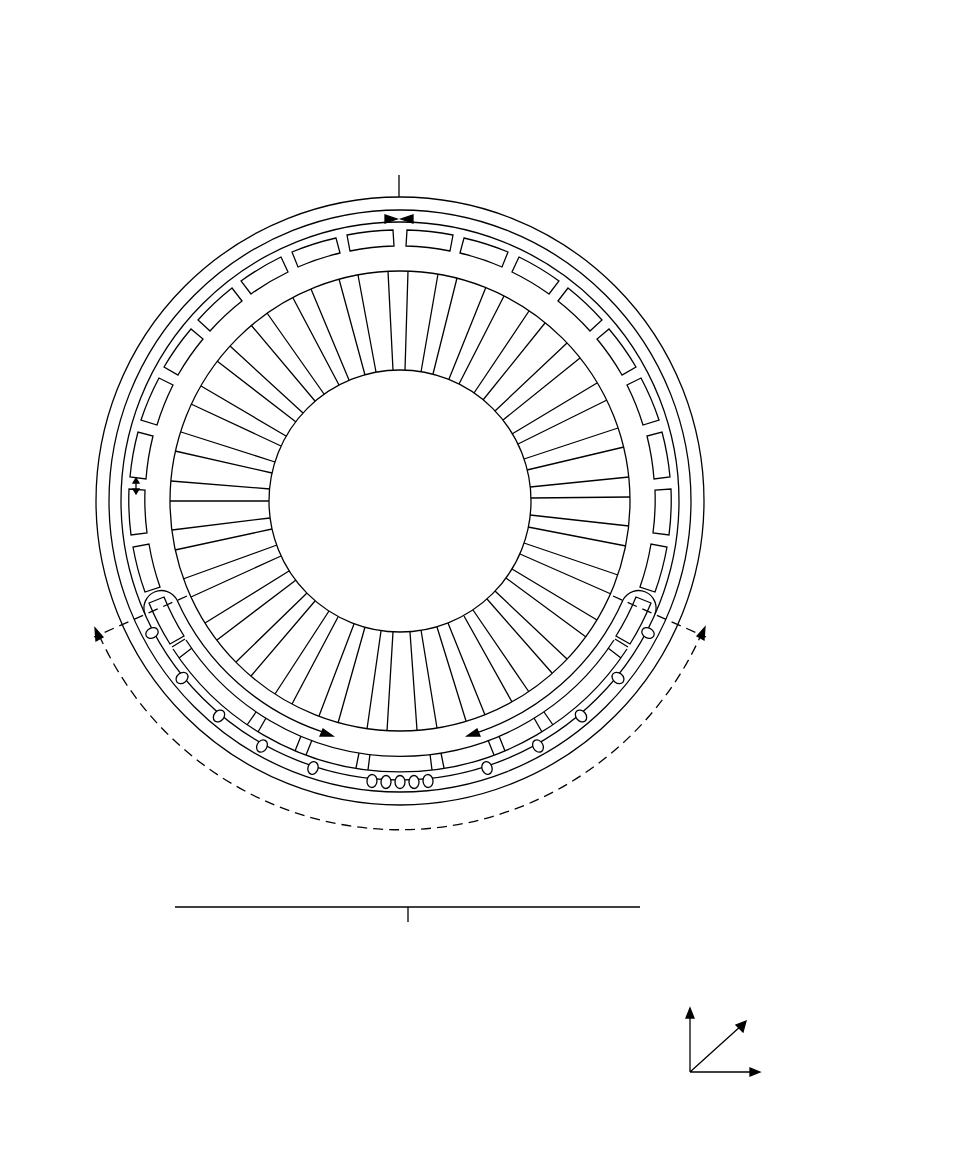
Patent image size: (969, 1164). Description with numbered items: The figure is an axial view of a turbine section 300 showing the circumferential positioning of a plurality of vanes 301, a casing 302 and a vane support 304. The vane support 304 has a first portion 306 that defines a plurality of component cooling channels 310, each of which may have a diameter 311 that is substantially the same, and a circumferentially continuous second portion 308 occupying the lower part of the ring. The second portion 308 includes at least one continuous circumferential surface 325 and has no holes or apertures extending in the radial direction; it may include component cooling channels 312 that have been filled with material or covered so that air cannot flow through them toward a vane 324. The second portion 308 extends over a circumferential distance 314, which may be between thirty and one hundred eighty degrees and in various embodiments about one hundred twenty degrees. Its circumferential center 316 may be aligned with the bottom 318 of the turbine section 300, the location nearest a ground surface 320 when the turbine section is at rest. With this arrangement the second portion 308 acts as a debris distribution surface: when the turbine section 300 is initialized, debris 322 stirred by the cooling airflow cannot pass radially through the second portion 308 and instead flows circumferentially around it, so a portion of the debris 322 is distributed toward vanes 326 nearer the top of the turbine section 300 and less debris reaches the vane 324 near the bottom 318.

The turbine section 300 is at (90, 30).
The vanes 301 is at (257, 494).
The casing 302 is at (97, 481).
The vane support 304 is at (147, 400).
The first portion 306 is at (172, 347).
The circumferentially continuous second portion 308 is at (168, 632).
The component cooling channels 310 is at (136, 548).
The diameter 311 is at (136, 487).
The component cooling channels 312 is at (655, 632).
The circumferential distance 314 is at (243, 793).
The circumferential center 316 is at (400, 752).
The bottom 318 is at (410, 806).
The ground surface 320 is at (407, 930).
The debris 322 is at (370, 786).
The vane 324 is at (387, 643).
The continuous circumferential surface 325 is at (200, 688).
The vanes 326 is at (340, 372).